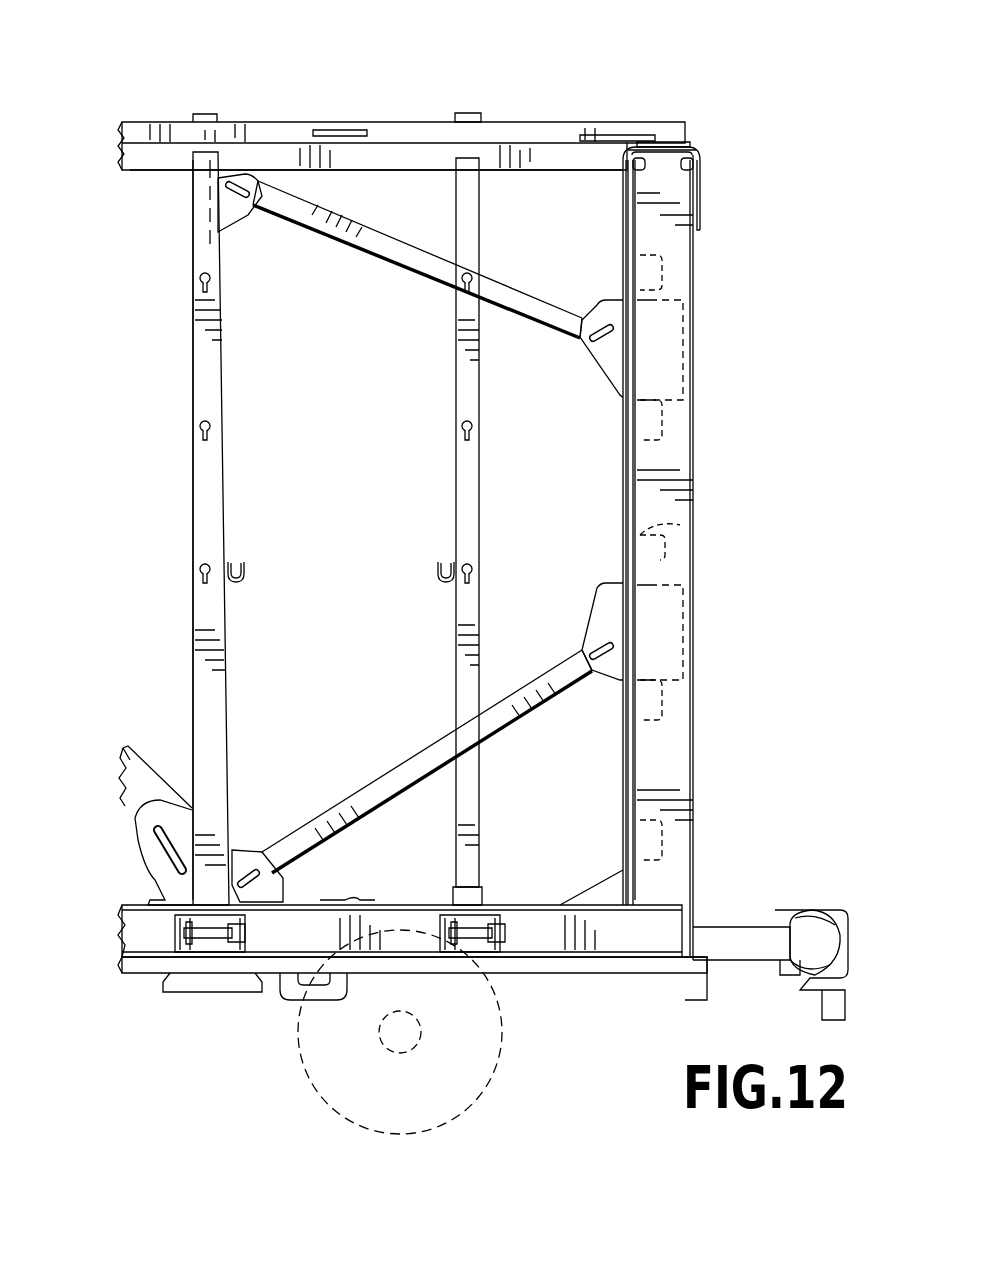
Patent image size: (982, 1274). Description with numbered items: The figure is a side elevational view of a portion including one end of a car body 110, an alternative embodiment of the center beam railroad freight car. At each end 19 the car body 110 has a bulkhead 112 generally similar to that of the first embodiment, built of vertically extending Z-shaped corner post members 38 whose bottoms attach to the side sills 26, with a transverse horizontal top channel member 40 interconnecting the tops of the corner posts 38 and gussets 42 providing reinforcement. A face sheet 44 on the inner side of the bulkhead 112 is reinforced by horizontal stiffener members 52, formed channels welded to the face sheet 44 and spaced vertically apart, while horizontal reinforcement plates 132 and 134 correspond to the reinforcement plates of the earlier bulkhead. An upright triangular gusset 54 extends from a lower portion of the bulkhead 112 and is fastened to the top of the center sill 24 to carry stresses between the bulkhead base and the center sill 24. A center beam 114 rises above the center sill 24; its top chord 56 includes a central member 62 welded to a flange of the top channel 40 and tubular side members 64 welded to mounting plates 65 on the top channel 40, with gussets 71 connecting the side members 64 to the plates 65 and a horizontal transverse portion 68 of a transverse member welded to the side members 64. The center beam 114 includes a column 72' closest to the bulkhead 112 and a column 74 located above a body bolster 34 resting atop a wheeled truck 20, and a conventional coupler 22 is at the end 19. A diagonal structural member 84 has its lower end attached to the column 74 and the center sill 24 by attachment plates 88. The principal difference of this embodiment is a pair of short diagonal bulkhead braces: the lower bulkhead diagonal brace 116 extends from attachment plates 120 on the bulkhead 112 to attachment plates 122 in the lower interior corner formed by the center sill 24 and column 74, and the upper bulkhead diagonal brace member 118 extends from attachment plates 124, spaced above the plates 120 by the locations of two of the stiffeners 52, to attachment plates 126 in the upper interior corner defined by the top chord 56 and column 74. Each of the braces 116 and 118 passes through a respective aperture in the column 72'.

The car body 110 is at (536, 78).
The top chord 56 is at (263, 121).
The side members 64 is at (385, 128).
The horizontal transverse portion 68 is at (468, 113).
The central member 62 is at (412, 150).
The gussets 71 is at (608, 135).
The mounting plate 65 is at (660, 142).
The horizontal top channel member 40 is at (700, 152).
The gussets 42 is at (700, 216).
The bulkhead 112 is at (693, 286).
The corner post members 38 is at (660, 480).
The face sheet 44 is at (623, 471).
The horizontal stiffener members 52 is at (670, 542).
The ends 19 is at (693, 787).
The attachment plates 124 is at (697, 342).
The horizontal reinforcement plate 134 is at (697, 407).
The attachment plates 120 is at (697, 628).
The horizontal reinforcement plate 132 is at (690, 702).
The column 74 is at (220, 366).
The center beam 114 is at (192, 223).
The column 72' is at (502, 531).
The upper bulkhead diagonal brace member 118 is at (374, 250).
The attachment plates 126 is at (246, 210).
The lower bulkhead diagonal brace 116 is at (368, 802).
The attachment plates 122 is at (250, 850).
The diagonal structural member 84 is at (137, 757).
The attachment plates 88 is at (150, 854).
The center sill 24 is at (550, 975).
The side sills 26 is at (625, 947).
The triangular gusset 54 is at (595, 892).
The body bolster 34 is at (215, 979).
The wheeled trucks 20 is at (480, 1102).
The coupler 22 is at (838, 912).